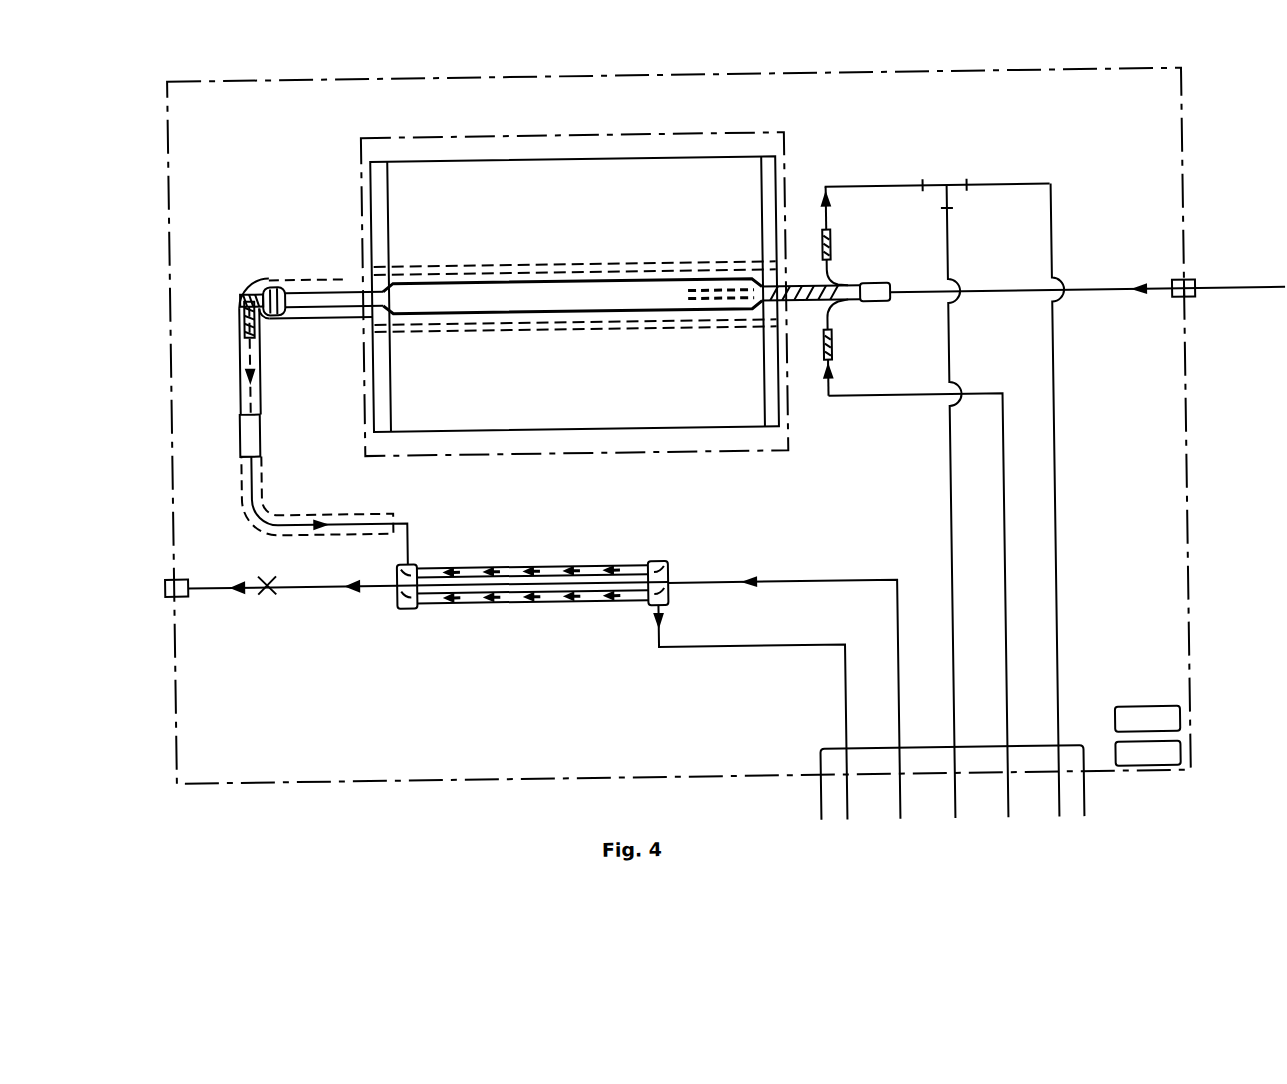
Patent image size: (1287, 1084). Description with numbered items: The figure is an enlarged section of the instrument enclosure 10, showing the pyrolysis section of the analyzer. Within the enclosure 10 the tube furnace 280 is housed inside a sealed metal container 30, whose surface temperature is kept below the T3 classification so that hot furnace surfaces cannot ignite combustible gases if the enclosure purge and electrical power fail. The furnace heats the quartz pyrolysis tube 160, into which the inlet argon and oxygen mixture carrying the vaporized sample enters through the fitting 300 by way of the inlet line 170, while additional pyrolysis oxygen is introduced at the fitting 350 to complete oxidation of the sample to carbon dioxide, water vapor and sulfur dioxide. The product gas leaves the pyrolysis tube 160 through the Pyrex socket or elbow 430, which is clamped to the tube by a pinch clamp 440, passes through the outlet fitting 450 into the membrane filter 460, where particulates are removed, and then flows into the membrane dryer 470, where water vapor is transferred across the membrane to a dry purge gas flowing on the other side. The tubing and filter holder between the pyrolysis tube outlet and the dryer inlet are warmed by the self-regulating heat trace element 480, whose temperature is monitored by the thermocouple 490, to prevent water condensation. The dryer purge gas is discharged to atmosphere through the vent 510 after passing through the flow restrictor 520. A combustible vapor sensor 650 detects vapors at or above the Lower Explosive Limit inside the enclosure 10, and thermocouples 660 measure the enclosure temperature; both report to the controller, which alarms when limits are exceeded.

The instrument enclosure 10 is at (247, 776).
The sealed metal container 30 is at (772, 452).
The tube furnace 280 is at (574, 429).
The pyrolysis tube 160 is at (575, 279).
The gas inlet line 170 is at (1023, 281).
The fitting 300 is at (846, 236).
The fitting 350 is at (847, 347).
The thermocouple 490 is at (349, 274).
The pinch clamp 440 is at (273, 282).
The Pyrex socket (elbow) 430 is at (243, 294).
The outlet fitting 450 is at (247, 330).
The membrane filter 460 is at (260, 432).
The heat trace element 480 is at (326, 514).
The membrane dryer 470 is at (533, 593).
The vent 510 is at (259, 587).
The flow restrictor 520 is at (306, 590).
The combustible vapor sensor 650 is at (1147, 719).
The thermocouples 660 is at (1147, 753).